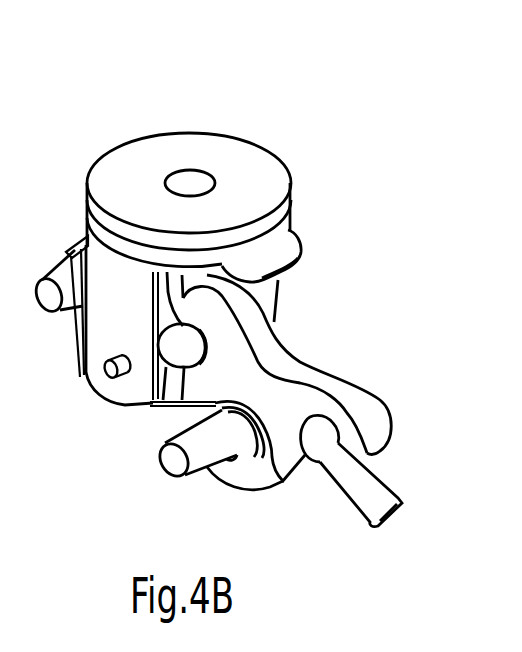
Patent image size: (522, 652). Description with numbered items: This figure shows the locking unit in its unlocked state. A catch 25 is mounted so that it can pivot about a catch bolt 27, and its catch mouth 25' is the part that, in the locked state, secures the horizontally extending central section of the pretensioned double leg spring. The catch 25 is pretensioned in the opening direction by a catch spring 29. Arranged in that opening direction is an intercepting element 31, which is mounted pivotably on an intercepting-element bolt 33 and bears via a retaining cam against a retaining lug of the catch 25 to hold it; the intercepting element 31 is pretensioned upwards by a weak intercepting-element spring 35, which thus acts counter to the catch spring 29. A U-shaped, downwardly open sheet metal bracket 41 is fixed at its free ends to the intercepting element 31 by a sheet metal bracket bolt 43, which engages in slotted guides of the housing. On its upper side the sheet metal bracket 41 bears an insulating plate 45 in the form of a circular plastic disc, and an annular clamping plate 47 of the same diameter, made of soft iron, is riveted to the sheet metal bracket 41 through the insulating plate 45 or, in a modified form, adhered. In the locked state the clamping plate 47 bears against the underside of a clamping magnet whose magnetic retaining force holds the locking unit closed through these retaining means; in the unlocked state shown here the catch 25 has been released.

The catch 25 is at (287, 364).
The catch mouth 25' is at (339, 484).
The catch bolt 27 is at (202, 446).
The catch spring 29 is at (258, 458).
The intercepting element 31 is at (153, 407).
The intercepting-element bolt 33 is at (72, 290).
The intercepting-element spring 35 is at (66, 250).
The sheet metal bracket 41 is at (112, 295).
The sheet metal bracket bolt 43 is at (108, 378).
The insulating plate 45 is at (262, 247).
The clamping plate 47 is at (288, 200).